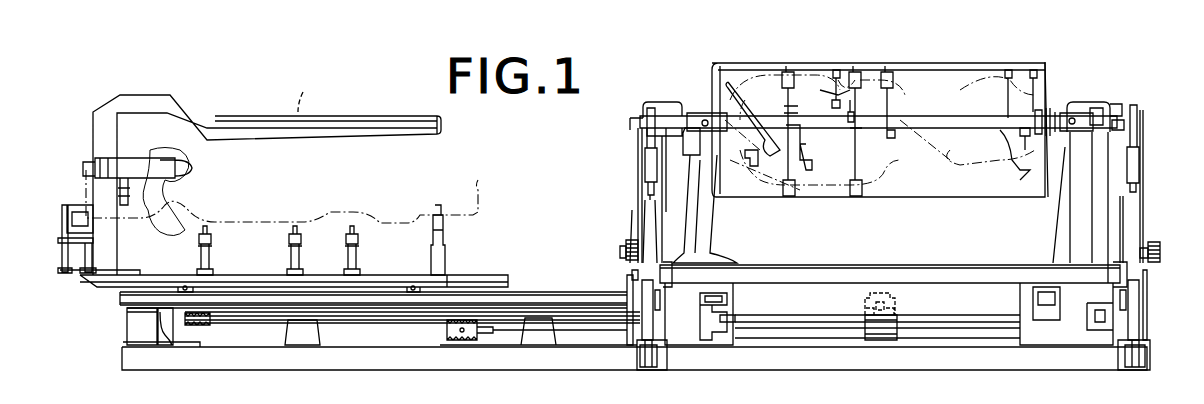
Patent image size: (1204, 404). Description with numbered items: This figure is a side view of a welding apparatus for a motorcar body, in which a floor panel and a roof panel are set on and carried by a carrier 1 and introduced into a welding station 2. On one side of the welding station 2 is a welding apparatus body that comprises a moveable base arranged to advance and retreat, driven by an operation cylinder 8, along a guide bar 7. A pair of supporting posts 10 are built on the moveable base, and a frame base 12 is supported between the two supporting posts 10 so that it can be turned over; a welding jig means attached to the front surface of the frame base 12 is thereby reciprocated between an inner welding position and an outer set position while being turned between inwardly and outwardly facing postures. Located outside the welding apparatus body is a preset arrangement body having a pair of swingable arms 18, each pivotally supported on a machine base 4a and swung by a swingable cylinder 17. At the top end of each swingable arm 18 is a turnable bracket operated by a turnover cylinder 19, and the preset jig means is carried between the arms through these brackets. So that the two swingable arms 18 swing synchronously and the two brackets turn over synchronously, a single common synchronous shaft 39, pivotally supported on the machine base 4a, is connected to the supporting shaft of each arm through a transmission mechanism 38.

The carrier 1 is at (385, 283).
The welding station 2 is at (693, 84).
The machine base 4a is at (643, 303).
The guide bar 7 is at (682, 327).
The operation cylinder 8 is at (882, 292).
The supporting post 10 is at (670, 173).
The frame base 12 is at (776, 193).
The swingable cylinder 17 is at (640, 330).
The swingable arm 18 is at (647, 203).
The turnover cylinder 19 is at (648, 157).
The transmission mechanism 38 is at (633, 257).
The synchronous shaft 39 is at (831, 273).